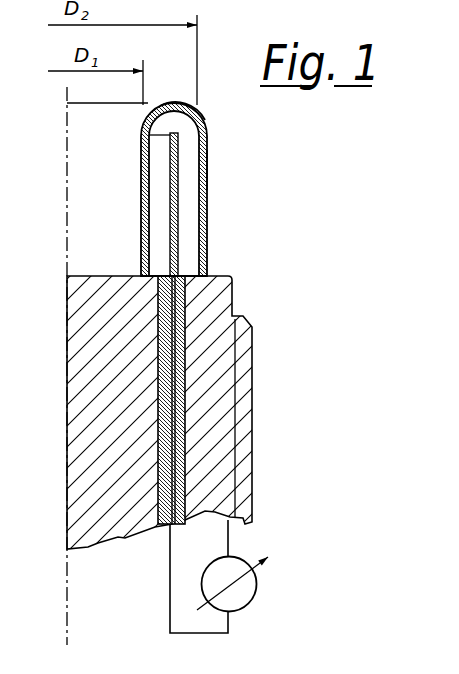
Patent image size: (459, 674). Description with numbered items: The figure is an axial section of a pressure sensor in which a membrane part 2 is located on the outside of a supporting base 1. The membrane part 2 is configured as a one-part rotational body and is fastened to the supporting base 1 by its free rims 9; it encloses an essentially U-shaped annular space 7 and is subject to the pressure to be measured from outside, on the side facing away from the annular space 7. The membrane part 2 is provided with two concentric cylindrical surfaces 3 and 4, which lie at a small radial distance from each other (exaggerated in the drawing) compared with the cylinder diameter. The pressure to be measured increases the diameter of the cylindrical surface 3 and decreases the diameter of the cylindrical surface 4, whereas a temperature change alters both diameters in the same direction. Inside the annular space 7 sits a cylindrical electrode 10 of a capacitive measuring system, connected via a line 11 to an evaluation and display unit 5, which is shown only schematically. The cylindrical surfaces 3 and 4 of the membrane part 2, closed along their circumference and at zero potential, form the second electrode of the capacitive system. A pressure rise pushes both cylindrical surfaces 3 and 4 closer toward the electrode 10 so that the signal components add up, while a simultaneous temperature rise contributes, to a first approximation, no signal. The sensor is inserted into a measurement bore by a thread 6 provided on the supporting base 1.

The supporting base 1 is at (105, 352).
The membrane part 2 is at (203, 102).
The cylindrical surface 3 is at (141, 160).
The cylindrical surface 4 is at (206, 168).
The evaluation and display unit 5 is at (242, 587).
The thread 6 is at (240, 438).
The annular space 7 is at (187, 143).
The free rims 9 is at (140, 273).
The cylindrical electrode 10 is at (175, 196).
The line 11 is at (175, 397).